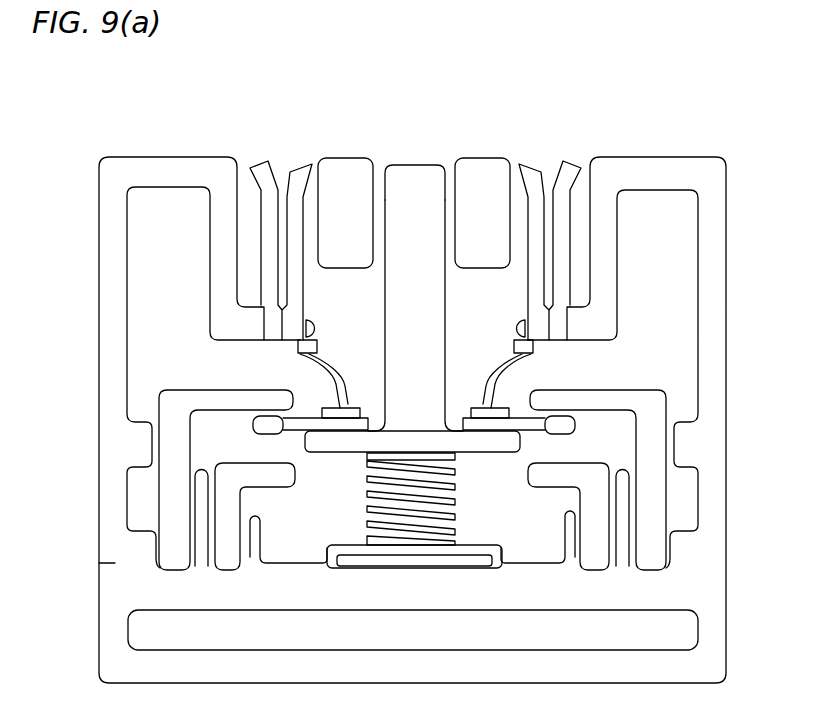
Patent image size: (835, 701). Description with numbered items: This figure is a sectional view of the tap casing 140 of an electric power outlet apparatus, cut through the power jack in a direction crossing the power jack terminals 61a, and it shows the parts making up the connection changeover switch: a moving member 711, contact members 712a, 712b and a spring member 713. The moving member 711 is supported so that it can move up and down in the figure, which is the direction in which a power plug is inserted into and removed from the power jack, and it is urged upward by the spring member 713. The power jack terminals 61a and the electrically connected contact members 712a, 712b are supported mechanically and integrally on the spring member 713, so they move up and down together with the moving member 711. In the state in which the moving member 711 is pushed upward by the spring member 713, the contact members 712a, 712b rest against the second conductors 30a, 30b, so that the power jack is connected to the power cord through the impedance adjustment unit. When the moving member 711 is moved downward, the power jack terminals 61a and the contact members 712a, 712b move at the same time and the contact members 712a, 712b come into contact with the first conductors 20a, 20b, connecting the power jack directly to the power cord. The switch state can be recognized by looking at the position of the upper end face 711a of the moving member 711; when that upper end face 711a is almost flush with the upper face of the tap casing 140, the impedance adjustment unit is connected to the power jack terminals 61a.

The tap casing 140 is at (705, 157).
The power jack terminal 61a is at (298, 176).
The upper end face of the moving member 711a is at (410, 164).
The moving member 711 is at (433, 322).
The contact member 712a is at (553, 424).
The contact member 712b is at (272, 427).
The spring member 713 is at (433, 502).
The second conductor 30a is at (650, 490).
The second conductor 30b is at (180, 503).
The first conductor 20a is at (595, 555).
The first conductor 20b is at (237, 545).